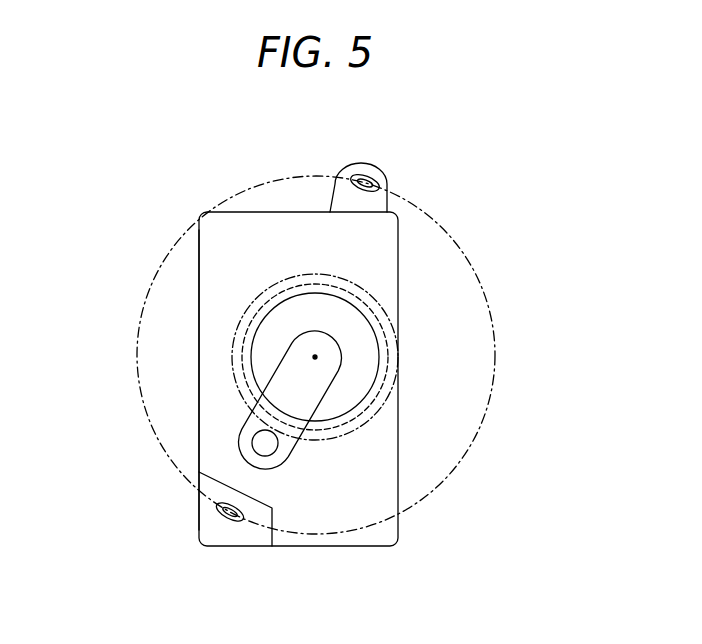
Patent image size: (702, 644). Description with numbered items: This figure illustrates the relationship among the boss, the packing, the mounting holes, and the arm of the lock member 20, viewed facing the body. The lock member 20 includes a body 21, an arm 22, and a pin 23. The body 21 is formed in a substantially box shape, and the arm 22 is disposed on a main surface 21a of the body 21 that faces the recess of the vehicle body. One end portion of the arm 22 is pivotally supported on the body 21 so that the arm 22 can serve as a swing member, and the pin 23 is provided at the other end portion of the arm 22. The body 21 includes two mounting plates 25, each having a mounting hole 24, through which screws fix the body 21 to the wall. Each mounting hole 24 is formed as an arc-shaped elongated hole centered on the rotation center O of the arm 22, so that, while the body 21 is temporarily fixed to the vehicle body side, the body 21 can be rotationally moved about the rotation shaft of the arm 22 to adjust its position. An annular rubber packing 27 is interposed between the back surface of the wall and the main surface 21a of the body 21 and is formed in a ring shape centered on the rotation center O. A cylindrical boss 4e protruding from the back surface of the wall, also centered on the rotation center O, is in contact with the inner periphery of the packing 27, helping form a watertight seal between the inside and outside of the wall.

The lock member 20 is at (507, 200).
The body 21 is at (378, 260).
The main surface 21a is at (209, 356).
The arm 22 is at (303, 392).
The pin 23 is at (270, 445).
The mounting hole 24 is at (381, 183).
The mounting plate 25 is at (372, 165).
The packing 27 is at (368, 289).
The boss 4e is at (402, 329).
The rotation center O is at (318, 357).